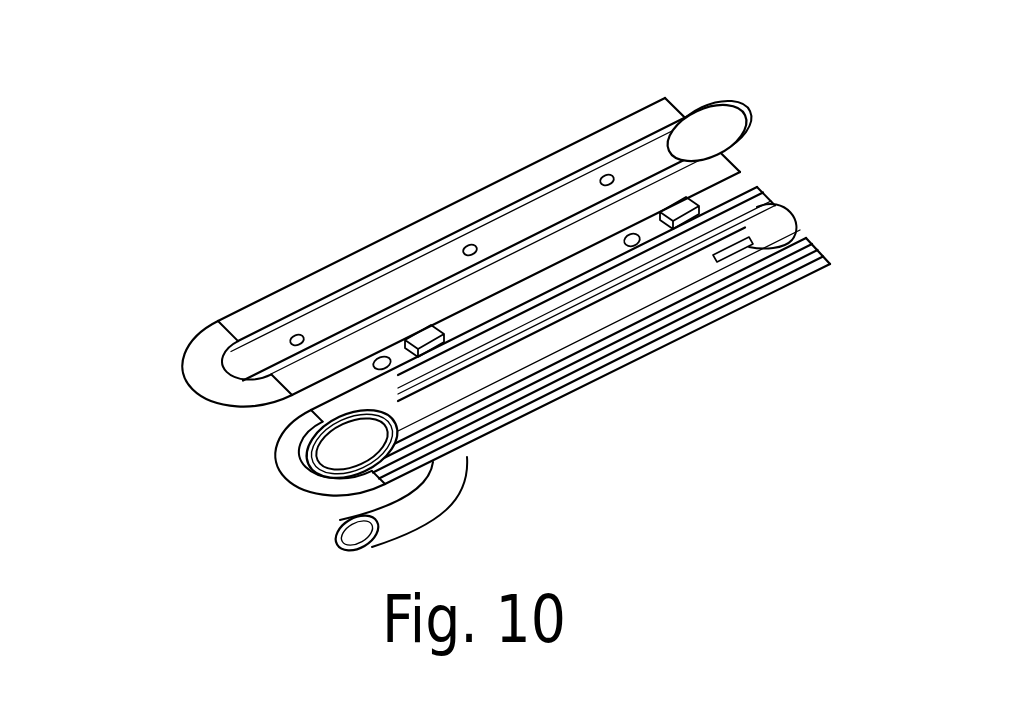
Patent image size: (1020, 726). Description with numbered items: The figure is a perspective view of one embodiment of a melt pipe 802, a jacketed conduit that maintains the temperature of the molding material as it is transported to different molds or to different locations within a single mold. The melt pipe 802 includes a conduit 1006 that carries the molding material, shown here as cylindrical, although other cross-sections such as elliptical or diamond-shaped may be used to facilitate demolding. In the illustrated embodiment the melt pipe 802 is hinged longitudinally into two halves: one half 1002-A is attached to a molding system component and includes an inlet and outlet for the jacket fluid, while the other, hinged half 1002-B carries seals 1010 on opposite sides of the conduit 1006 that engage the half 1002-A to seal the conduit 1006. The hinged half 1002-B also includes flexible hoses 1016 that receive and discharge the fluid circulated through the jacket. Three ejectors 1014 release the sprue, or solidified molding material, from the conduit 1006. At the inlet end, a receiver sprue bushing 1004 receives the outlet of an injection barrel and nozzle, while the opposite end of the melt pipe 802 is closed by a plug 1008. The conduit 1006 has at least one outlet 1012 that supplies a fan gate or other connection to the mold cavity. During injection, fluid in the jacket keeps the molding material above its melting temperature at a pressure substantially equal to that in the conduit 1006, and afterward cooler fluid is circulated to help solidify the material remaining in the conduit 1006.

The melt pipe 802 is at (181, 148).
The half of the melt pipe 1002-A is at (183, 372).
The hinged half of the melt pipe 1002-B is at (278, 463).
The receiver sprue bushing 1004 is at (318, 472).
The conduit 1006 is at (390, 265).
The plug 1008 is at (750, 127).
The seals 1010 is at (762, 198).
The outlet 1012 is at (767, 232).
The ejectors 1014 is at (607, 180).
The flexible hoses 1016 is at (467, 497).